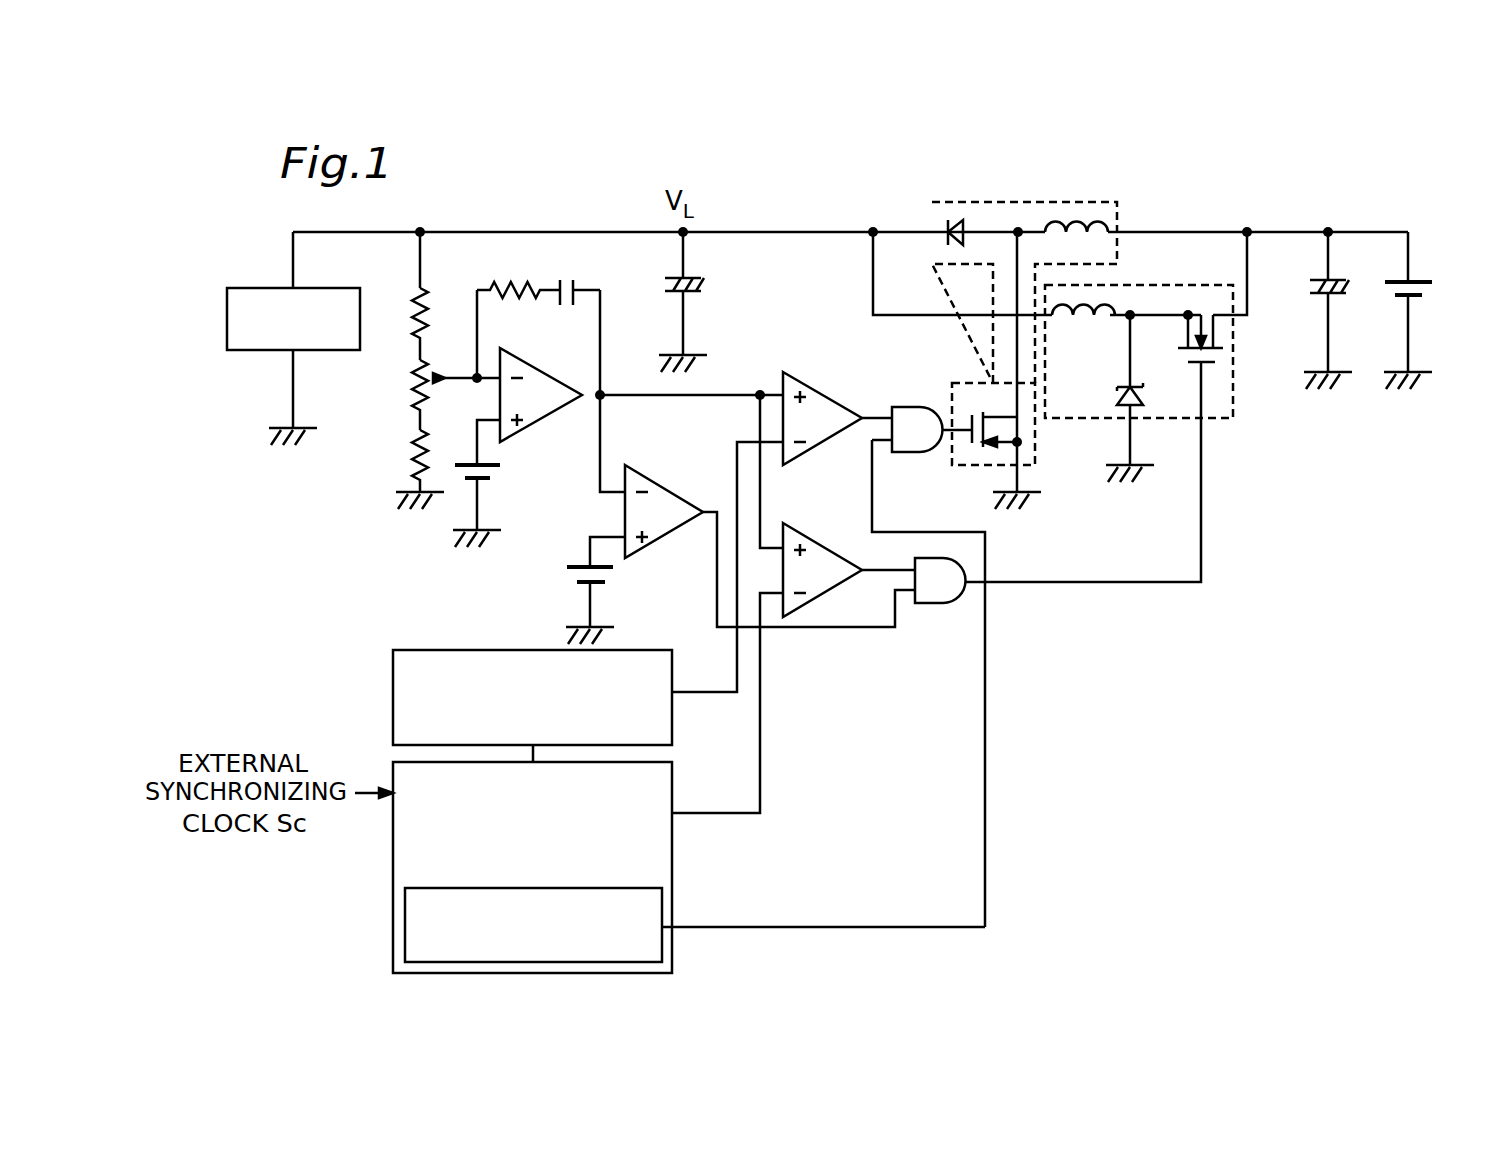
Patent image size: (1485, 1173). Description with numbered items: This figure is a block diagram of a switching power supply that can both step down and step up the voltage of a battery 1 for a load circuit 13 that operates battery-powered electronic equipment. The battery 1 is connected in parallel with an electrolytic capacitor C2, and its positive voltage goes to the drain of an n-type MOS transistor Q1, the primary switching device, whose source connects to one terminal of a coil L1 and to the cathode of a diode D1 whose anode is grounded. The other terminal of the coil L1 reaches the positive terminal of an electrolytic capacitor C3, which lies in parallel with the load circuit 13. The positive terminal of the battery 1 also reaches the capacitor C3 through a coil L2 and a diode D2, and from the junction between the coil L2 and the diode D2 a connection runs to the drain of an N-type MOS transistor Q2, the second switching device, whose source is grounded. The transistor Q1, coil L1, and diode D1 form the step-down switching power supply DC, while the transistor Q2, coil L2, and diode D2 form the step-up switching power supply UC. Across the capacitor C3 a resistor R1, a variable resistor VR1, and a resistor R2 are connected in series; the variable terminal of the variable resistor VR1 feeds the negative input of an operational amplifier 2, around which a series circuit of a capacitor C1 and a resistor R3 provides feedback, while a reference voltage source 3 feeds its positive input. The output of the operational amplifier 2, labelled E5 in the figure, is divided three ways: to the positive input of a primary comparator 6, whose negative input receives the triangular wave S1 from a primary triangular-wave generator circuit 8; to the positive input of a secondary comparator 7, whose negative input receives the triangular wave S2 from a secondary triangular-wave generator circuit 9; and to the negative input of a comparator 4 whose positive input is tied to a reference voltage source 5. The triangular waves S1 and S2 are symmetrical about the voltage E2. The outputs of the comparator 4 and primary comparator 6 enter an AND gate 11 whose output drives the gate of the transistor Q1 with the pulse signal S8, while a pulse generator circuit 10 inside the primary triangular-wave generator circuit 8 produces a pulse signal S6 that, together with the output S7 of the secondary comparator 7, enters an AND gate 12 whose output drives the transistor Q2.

The battery 1 is at (1432, 282).
The operational amplifier 2 is at (528, 358).
The reference voltage source 3 is at (496, 477).
The comparator 4 is at (665, 535).
The reference voltage source 5 is at (610, 580).
The primary comparator 6 is at (826, 548).
The secondary comparator 7 is at (826, 392).
The primary triangular-wave generator circuit 8 is at (393, 886).
The secondary triangular-wave generator circuit 9 is at (467, 648).
The pulse generator circuit 10 is at (405, 940).
The AND gate 11 is at (932, 605).
The AND gate 12 is at (912, 452).
The load circuit 13 is at (253, 287).
The resistor R1 is at (413, 337).
The resistor R2 is at (405, 458).
The resistor R3 is at (521, 280).
The variable resistor VR1 is at (405, 403).
The capacitor C1 is at (578, 281).
The electrolytic capacitor C2 is at (1348, 278).
The electrolytic capacitor C3 is at (704, 282).
The diode D1 is at (1116, 400).
The diode D2 is at (963, 225).
The coil L1 is at (1097, 300).
The coil L2 is at (1100, 212).
The n-type MOS transistor Q1 is at (1222, 362).
The N-type MOS transistor Q2 is at (974, 396).
The step-up switching power supply UC is at (939, 200).
The step-down switching power supply DC is at (1217, 282).
The voltage E2 is at (568, 539).
The error voltage E5 is at (691, 471).
The triangular wave S1 is at (727, 703).
The triangular wave S2 is at (727, 583).
The pulse signal S6 is at (770, 932).
The comparator output S7 is at (876, 416).
The pulse signal S8 is at (866, 575).